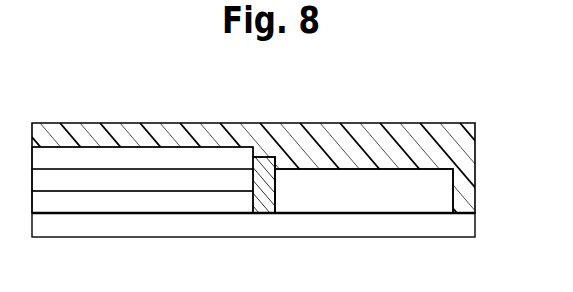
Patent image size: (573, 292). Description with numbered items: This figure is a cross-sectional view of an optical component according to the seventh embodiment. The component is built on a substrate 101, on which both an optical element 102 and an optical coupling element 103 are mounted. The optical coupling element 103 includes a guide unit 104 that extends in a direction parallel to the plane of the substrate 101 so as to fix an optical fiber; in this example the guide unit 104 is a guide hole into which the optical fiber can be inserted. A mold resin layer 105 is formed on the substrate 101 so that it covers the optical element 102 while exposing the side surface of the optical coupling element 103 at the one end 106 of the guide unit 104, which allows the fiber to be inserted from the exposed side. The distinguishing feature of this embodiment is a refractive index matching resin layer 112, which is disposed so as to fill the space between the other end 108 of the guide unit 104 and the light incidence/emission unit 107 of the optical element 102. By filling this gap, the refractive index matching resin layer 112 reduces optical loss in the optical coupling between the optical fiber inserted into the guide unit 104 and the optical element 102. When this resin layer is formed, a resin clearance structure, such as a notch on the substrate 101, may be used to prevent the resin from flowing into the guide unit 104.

The substrate 101 is at (475, 223).
The optical element 102 is at (364, 177).
The optical coupling element 103 is at (146, 152).
The guide unit 104 is at (218, 177).
The mold resin layer 105 is at (475, 145).
The one end of the guide unit 106 is at (32, 180).
The light incidence/emission unit 107 is at (270, 187).
The other end of the guide unit 108 is at (258, 213).
The refractive index matching resin layer 112 is at (277, 213).